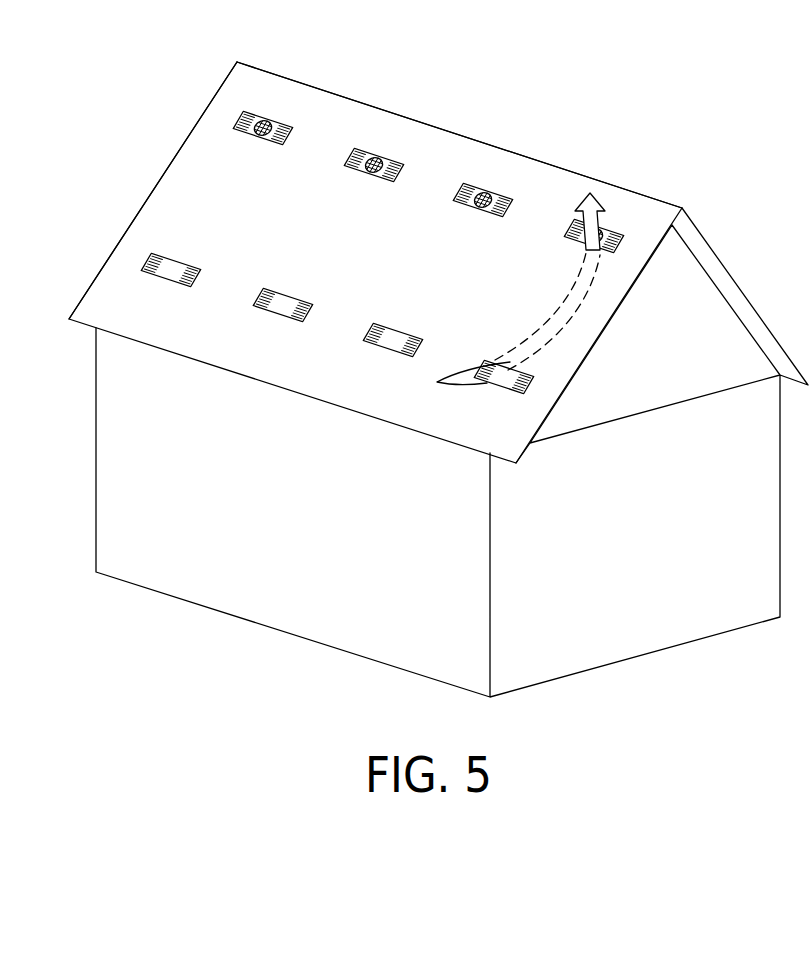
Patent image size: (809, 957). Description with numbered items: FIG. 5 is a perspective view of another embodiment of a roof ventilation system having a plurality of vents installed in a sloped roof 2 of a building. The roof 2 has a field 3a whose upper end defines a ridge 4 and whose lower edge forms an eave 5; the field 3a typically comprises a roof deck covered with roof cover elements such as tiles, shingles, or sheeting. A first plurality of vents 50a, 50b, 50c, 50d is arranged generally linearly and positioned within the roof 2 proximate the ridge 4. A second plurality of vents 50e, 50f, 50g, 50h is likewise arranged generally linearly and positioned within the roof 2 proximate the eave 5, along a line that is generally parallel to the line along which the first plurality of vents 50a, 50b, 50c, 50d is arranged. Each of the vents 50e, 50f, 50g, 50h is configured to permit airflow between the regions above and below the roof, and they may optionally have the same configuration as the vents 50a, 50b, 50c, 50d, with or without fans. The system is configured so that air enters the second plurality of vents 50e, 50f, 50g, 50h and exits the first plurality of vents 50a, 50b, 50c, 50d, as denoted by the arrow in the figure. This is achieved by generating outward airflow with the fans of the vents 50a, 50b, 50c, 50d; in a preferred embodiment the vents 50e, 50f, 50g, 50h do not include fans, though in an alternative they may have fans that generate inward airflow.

The roof 2 is at (192, 121).
The field 3a is at (170, 213).
The ridge 4 is at (538, 160).
The eave 5 is at (122, 337).
The vent 50a is at (263, 112).
The vent 50b is at (374, 148).
The vent 50c is at (483, 183).
The vent 50d is at (610, 220).
The vent 50e is at (163, 279).
The vent 50f is at (275, 323).
The vent 50g is at (388, 358).
The vent 50h is at (494, 393).